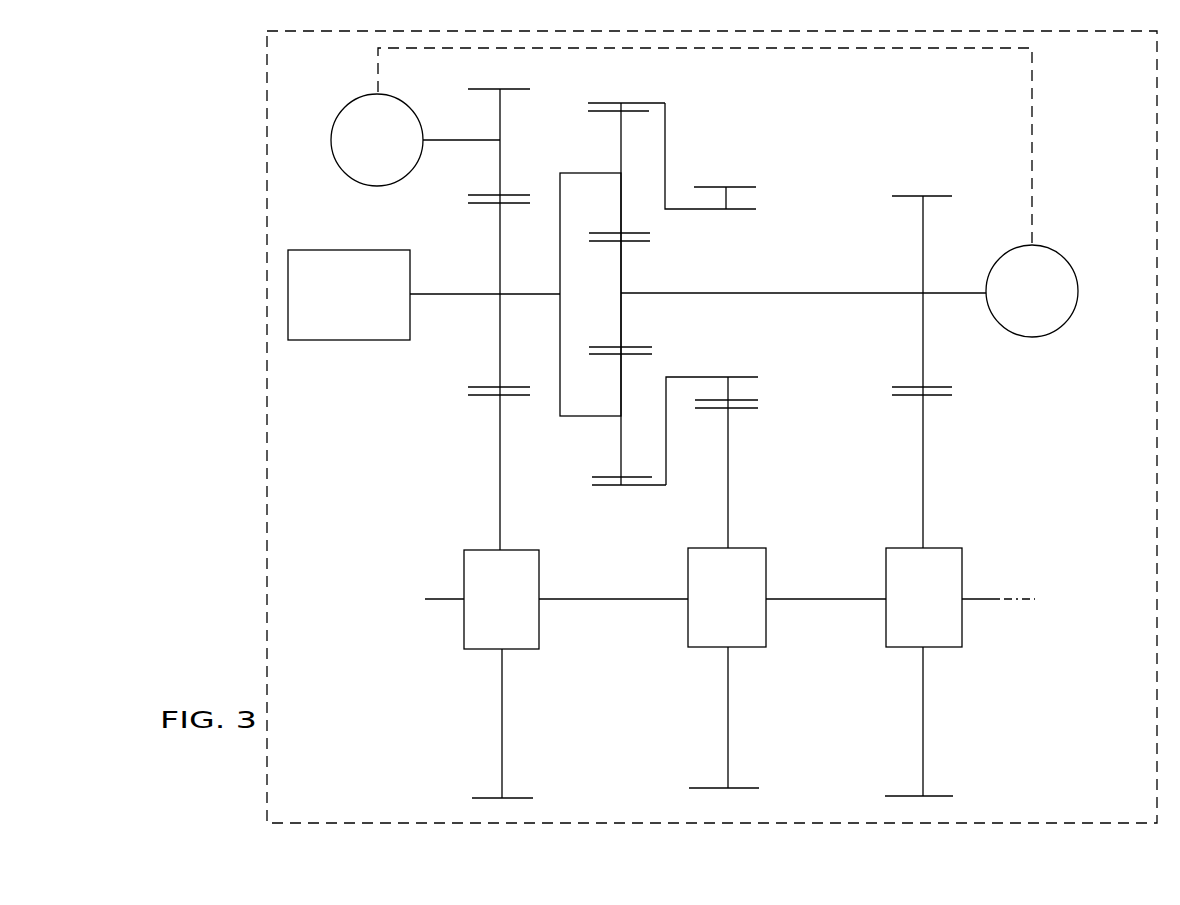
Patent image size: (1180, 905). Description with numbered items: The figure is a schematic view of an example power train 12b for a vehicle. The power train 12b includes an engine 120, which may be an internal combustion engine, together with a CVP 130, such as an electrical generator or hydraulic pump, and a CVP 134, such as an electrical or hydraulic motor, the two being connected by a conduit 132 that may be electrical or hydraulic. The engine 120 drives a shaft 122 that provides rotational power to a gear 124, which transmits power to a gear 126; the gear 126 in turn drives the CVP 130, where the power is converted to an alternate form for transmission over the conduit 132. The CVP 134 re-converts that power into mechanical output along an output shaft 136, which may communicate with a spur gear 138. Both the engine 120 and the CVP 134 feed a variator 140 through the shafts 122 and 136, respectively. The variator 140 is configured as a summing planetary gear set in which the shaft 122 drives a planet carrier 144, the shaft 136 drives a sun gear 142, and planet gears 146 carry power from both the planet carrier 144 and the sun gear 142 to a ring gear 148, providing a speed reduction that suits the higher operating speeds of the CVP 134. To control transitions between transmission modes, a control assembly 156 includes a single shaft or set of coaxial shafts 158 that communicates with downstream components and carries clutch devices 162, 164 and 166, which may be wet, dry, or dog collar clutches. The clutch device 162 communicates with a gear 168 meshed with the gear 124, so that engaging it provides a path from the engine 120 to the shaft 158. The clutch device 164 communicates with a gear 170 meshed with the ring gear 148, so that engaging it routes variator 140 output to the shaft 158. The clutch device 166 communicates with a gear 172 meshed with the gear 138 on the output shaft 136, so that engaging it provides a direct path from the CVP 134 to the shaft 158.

The power train 12b is at (1135, 766).
The engine 120 is at (368, 250).
The shaft 122 is at (478, 294).
The gear 124 is at (500, 368).
The gear 126 is at (498, 168).
The CVP 130 is at (372, 92).
The conduit 132 is at (1030, 150).
The CVP 134 is at (1051, 243).
The output shaft 136 is at (958, 294).
The spur gear 138 is at (922, 242).
The variator 140 is at (762, 139).
The sun gear 142 is at (621, 320).
The planet carrier 144 is at (578, 172).
The planet gears 146 is at (621, 203).
The ring gear 148 is at (668, 152).
The control assembly 156 is at (458, 717).
The shaft 158 is at (840, 599).
The clutch device 162 is at (464, 565).
The clutch device 164 is at (766, 571).
The clutch device 166 is at (962, 571).
The gear 168 is at (500, 451).
The gear 170 is at (728, 486).
The gear 172 is at (923, 486).